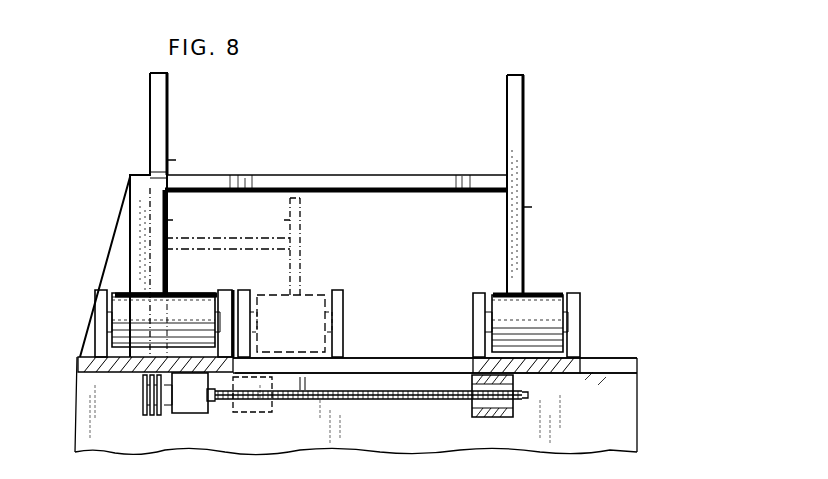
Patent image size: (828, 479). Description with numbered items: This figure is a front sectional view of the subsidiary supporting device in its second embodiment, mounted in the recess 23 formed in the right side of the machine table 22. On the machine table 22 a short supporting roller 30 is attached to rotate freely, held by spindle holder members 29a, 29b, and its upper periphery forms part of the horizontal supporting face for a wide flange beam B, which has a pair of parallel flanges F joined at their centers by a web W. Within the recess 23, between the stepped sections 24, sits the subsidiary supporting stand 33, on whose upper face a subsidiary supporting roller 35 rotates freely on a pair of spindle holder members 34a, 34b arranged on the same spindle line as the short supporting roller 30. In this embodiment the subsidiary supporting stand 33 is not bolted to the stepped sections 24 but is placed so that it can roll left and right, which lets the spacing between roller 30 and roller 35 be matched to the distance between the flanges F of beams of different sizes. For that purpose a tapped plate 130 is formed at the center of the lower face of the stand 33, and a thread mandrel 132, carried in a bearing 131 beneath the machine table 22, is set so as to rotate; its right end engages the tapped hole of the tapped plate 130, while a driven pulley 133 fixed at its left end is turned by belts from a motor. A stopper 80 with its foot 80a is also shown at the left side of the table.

The machine table 22 is at (637, 385).
The recess 23 is at (405, 366).
The stepped sections 24 is at (611, 366).
The subsidiary supporting stand 33 is at (343, 368).
The bracket 29a is at (96, 294).
The bracket 29b is at (236, 292).
The short supporting roller 30 is at (200, 292).
The spindle holder member 34a is at (245, 294).
The spindle holder member 34b is at (343, 294).
The subsidiary supporting roller 35 is at (310, 294).
The stopper post 80 is at (124, 217).
The stopper foot 80a is at (150, 176).
The nut 130 is at (262, 412).
The bearing block 131 is at (190, 405).
The thread mandrel 132 is at (436, 401).
The driven pulley 133 is at (143, 399).
The web W is at (462, 178).
The wide flange beam B is at (523, 150).
The flange F is at (354, 191).